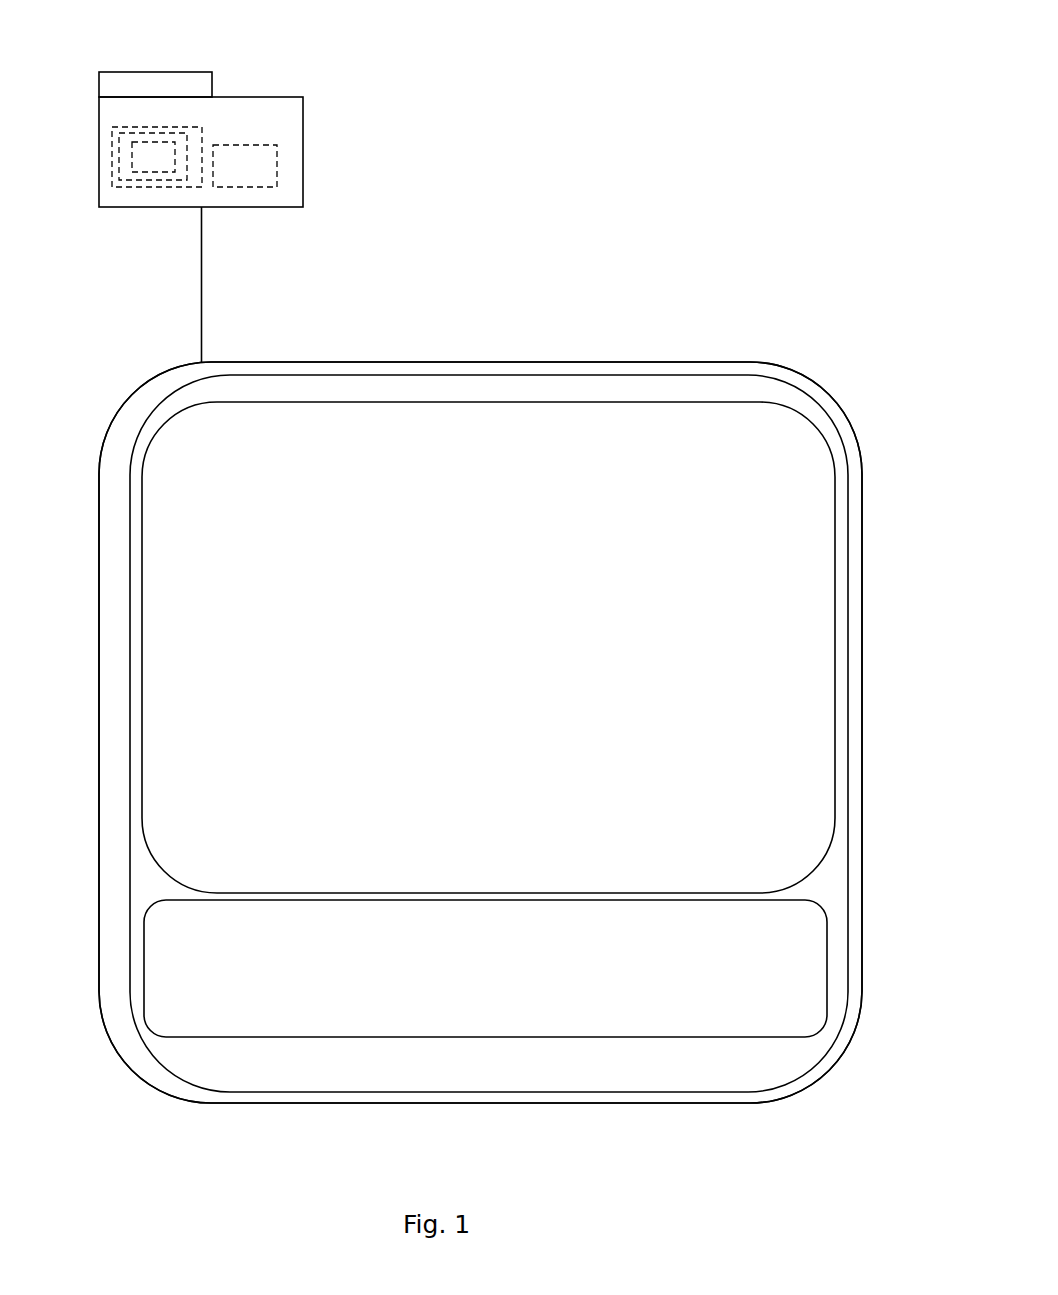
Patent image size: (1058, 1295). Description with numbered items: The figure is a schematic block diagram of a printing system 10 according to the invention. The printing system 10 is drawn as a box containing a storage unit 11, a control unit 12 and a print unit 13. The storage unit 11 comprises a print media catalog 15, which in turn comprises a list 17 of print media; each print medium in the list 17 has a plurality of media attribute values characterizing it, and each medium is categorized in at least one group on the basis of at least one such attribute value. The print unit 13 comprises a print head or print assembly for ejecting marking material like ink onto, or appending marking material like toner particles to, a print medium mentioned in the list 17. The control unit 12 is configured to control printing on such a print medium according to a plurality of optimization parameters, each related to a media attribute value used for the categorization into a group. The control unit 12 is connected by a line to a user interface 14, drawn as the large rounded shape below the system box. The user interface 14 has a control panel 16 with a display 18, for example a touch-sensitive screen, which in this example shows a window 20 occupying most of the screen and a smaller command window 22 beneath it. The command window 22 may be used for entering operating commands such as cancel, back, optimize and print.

The printing system 10 is at (268, 97).
The storage unit 11 is at (112, 171).
The control unit 12 is at (277, 170).
The print unit 13 is at (147, 87).
The user interface 14 is at (744, 317).
The print media catalog 15 is at (128, 177).
The control panel 16 is at (477, 362).
The list 17 is at (175, 170).
The display 18 is at (537, 375).
The window 20 is at (382, 402).
The command window 22 is at (608, 1008).